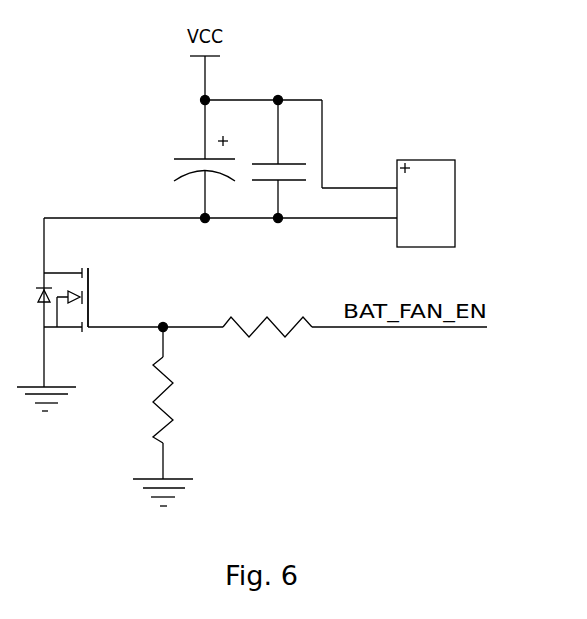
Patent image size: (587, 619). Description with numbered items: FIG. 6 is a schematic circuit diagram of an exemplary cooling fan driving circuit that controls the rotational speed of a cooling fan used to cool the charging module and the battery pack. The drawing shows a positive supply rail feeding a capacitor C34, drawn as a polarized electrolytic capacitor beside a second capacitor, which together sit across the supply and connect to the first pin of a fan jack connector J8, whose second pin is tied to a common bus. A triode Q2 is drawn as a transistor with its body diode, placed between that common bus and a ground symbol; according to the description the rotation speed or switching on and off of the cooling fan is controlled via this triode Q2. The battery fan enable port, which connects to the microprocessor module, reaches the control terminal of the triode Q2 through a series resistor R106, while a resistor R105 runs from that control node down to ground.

The electrolytic capacitor C34 is at (175, 177).
The fan jack connector FAN-JACK-2 J8 is at (414, 205).
The triode Q2 is at (62, 302).
The resistor R106 is at (266, 310).
The pull-down resistor R105 is at (200, 403).